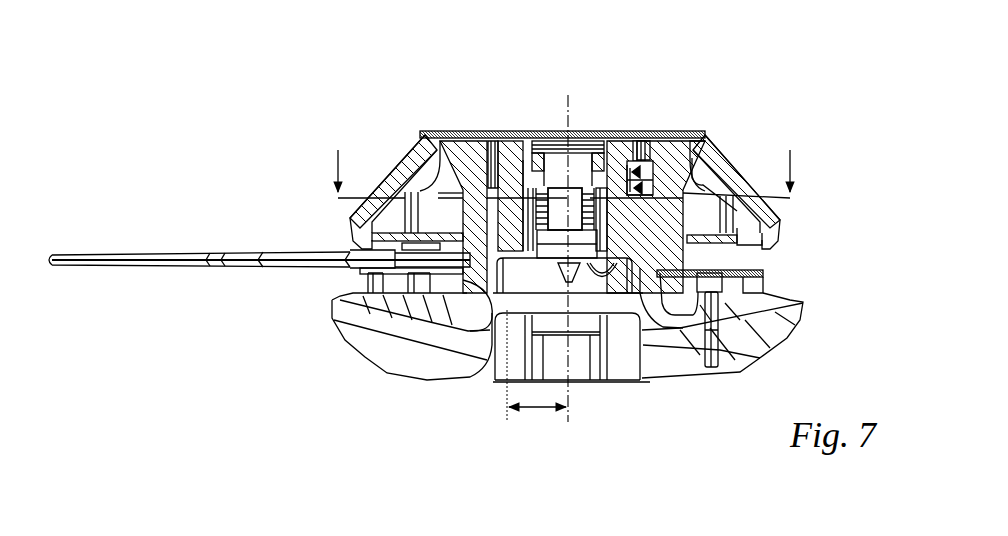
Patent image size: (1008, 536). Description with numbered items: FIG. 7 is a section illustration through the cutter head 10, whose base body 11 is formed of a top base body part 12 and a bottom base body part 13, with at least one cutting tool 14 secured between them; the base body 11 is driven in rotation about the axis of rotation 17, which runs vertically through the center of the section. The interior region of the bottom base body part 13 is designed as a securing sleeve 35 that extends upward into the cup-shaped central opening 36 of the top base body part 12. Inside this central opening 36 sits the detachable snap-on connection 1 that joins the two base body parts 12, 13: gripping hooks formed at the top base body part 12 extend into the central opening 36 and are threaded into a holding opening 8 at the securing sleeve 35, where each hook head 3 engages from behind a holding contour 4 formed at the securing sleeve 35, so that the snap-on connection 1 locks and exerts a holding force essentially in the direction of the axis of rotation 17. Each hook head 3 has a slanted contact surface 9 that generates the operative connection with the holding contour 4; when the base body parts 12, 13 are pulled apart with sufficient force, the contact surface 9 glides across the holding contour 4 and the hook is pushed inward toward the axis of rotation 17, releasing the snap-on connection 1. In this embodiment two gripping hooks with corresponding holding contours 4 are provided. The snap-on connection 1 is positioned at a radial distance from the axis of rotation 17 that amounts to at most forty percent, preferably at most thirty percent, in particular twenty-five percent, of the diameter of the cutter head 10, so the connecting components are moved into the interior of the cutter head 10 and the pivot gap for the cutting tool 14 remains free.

The snap-on connection 1 is at (647, 172).
The hook head 3 is at (683, 243).
The holding contour 4 is at (518, 181).
The holding opening 8 is at (498, 191).
The contact surface 9 is at (642, 210).
The cutter head 10 is at (326, 69).
The base body 11 is at (420, 142).
The top base body part 12 is at (389, 179).
The bottom base body part 13 is at (780, 344).
The cutting tool 14 is at (100, 254).
The axis of rotation 17 is at (572, 105).
The securing sleeve 35 is at (491, 178).
The central opening 36 is at (466, 198).